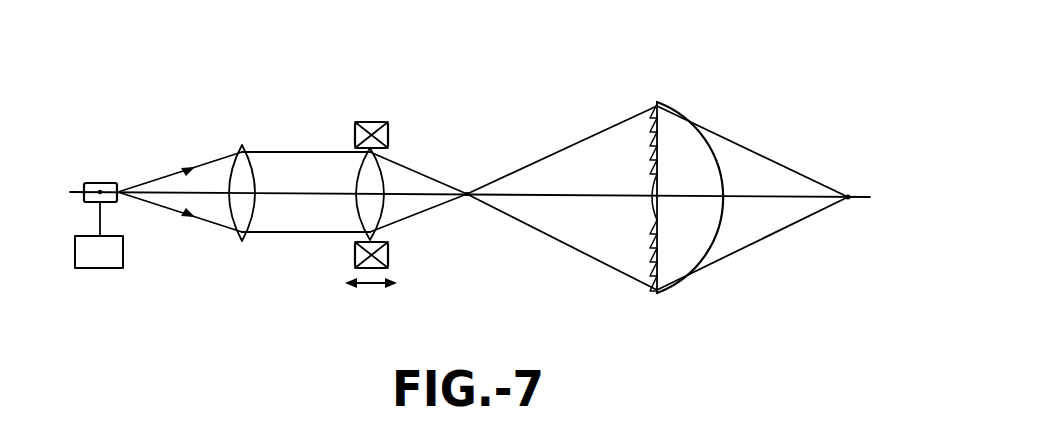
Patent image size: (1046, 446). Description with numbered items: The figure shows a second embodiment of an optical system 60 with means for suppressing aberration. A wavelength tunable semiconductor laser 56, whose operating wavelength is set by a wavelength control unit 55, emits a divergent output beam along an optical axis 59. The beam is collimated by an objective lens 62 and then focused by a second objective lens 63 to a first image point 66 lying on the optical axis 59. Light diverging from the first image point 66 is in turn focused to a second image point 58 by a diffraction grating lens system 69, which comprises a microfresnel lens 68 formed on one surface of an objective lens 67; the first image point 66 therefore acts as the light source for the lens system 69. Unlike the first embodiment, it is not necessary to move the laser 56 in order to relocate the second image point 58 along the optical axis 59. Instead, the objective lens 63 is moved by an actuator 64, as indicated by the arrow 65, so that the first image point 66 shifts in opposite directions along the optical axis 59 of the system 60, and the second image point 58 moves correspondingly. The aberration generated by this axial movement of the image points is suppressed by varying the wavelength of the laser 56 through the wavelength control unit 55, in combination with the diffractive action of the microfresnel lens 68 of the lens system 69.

The wavelength control unit 55 is at (99, 235).
The wavelength tunable semiconductor laser 56 is at (102, 183).
The second image point 58 is at (851, 159).
The optical axis 59 is at (563, 199).
The optical system 60 is at (613, 43).
The objective lens 62 is at (240, 145).
The objective lens 63 is at (383, 161).
The actuator 64 is at (355, 250).
The arrow 65 is at (373, 289).
The first image point 66 is at (468, 191).
The objective lens 67 is at (673, 106).
The microfresnel lens 68 is at (655, 103).
The diffraction grating lens system 69 is at (706, 108).